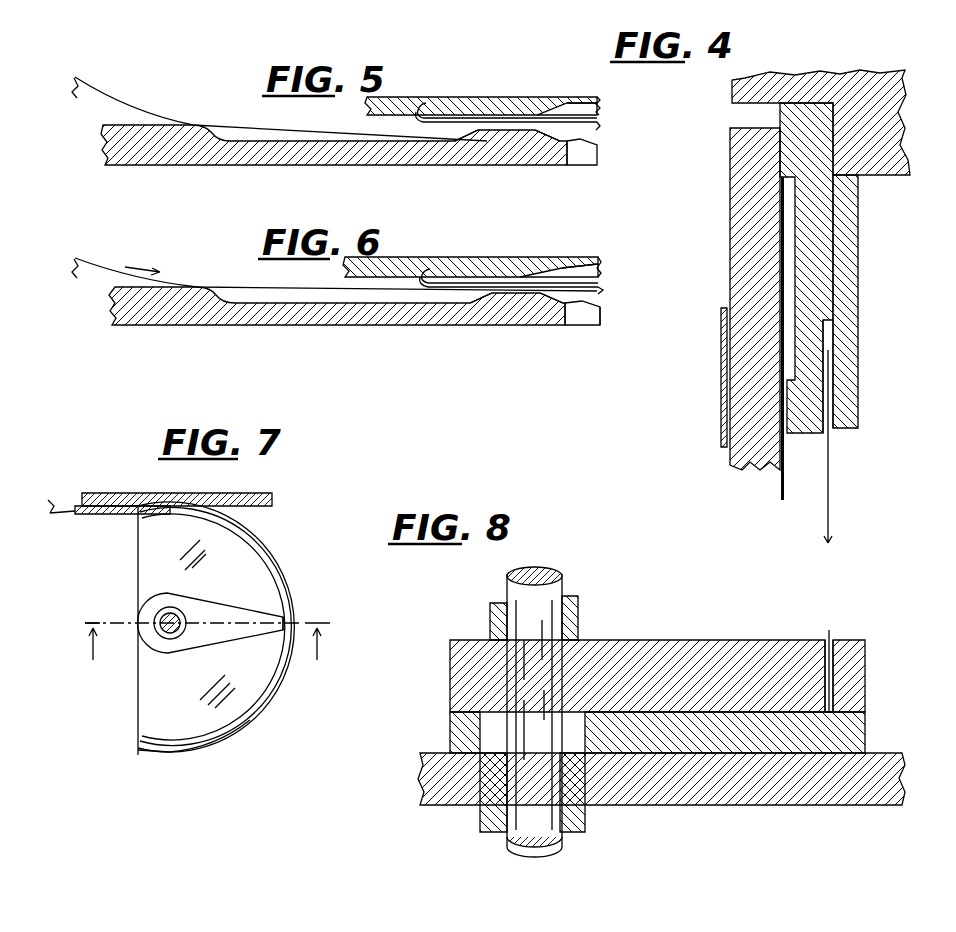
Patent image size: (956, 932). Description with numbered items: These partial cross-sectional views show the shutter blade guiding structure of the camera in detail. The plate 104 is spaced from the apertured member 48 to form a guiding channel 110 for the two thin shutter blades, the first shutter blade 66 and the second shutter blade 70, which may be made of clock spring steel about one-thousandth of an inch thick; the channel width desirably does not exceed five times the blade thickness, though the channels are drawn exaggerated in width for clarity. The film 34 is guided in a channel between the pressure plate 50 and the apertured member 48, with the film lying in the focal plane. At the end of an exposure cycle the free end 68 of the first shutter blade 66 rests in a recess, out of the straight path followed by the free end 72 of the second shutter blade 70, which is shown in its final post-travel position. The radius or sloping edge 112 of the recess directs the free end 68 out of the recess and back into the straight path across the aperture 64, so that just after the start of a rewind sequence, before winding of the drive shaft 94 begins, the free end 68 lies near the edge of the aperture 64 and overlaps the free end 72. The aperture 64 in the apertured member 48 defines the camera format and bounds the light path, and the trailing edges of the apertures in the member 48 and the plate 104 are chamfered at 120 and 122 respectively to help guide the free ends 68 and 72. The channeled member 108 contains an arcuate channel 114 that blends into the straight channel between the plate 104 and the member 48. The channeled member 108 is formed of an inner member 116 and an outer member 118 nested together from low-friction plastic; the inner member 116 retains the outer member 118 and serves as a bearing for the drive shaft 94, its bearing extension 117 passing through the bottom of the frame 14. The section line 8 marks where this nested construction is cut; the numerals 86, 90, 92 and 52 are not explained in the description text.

In FIG. 4, the frame 14 is at (878, 166).
In FIG. 8, the frame 14 is at (786, 805).
In FIG. 4, the film 34 is at (780, 492).
In FIG. 5, the apertured member 48 is at (517, 157).
In FIG. 6, the apertured member 48 is at (428, 325).
In FIG. 4, the apertured member 48 is at (781, 120).
In FIG. 7, the apertured member 48 is at (222, 493).
In FIG. 4, the pressure plate 50 is at (742, 167).
In FIG. 4, the liner strip 52 is at (722, 318).
In FIG. 6, the aperture 64 is at (585, 330).
In FIG. 5, the shutter blade 66 is at (345, 128).
In FIG. 6, the shutter blade 66 is at (298, 292).
In FIG. 5, the free end 68 is at (450, 141).
In FIG. 6, the free end 68 is at (540, 305).
In FIG. 5, the second shutter blade 70 is at (456, 120).
In FIG. 6, the second shutter blade 70 is at (605, 285).
In FIG. 4, the second shutter blade 70 is at (826, 510).
In FIG. 7, the second shutter blade 70 is at (82, 505).
In FIG. 8, the second shutter blade 70 is at (829, 630).
In FIG. 5, the free end 72 is at (423, 118).
In FIG. 6, the free end 72 is at (440, 282).
In FIG. 7, the arm tip 86 is at (270, 640).
In FIG. 7, the pivot arm 90 is at (205, 605).
In FIG. 7, the bushing / hub 92 is at (156, 605).
In FIG. 8, the bushing / hub 92 is at (580, 610).
In FIG. 7, the drive shaft 94 is at (158, 623).
In FIG. 8, the drive shaft 94 is at (532, 568).
In FIG. 5, the plate 104 is at (482, 99).
In FIG. 6, the plate 104 is at (515, 262).
In FIG. 4, the plate 104 is at (851, 222).
In FIG. 7, the channeled member 108 is at (262, 525).
In FIG. 5, the guiding channel 110 is at (600, 124).
In FIG. 6, the guiding channel 110 is at (603, 290).
In FIG. 4, the guiding channel 110 is at (826, 436).
In FIG. 5, the sloping edge 112 is at (467, 163).
In FIG. 6, the sloping edge 112 is at (470, 325).
In FIG. 7, the arcuate channel 114 is at (262, 718).
In FIG. 8, the inner member 116 is at (690, 648).
In FIG. 8, the bearing extension 117 is at (590, 832).
In FIG. 8, the outer member 118 is at (892, 630).
In FIG. 5, the chamfer 120 is at (600, 145).
In FIG. 6, the chamfer 120 is at (603, 311).
In FIG. 5, the chamfer 122 is at (600, 103).
In FIG. 6, the chamfer 122 is at (585, 268).
In FIG. 7, the section line 8- 8 is at (207, 654).